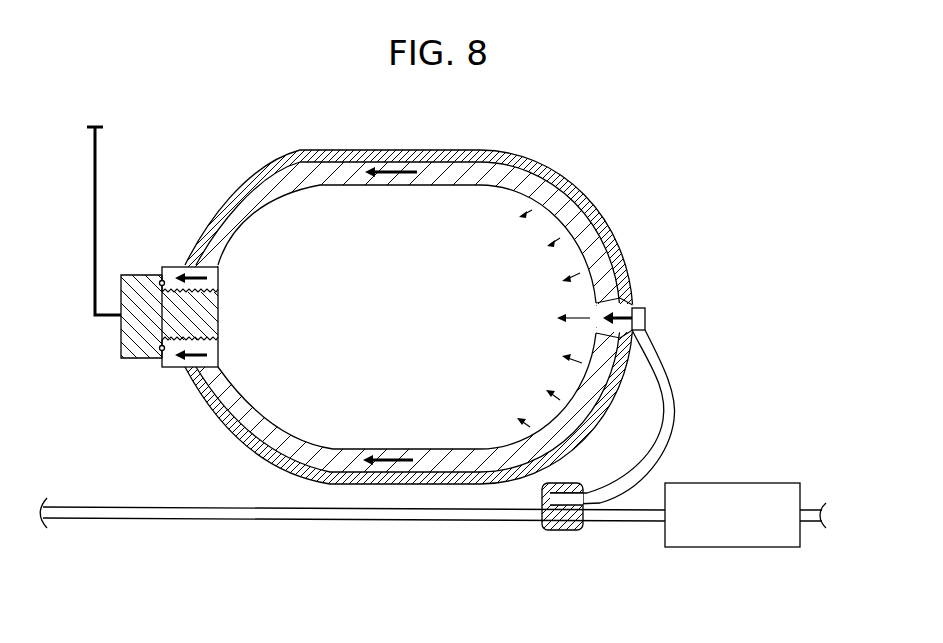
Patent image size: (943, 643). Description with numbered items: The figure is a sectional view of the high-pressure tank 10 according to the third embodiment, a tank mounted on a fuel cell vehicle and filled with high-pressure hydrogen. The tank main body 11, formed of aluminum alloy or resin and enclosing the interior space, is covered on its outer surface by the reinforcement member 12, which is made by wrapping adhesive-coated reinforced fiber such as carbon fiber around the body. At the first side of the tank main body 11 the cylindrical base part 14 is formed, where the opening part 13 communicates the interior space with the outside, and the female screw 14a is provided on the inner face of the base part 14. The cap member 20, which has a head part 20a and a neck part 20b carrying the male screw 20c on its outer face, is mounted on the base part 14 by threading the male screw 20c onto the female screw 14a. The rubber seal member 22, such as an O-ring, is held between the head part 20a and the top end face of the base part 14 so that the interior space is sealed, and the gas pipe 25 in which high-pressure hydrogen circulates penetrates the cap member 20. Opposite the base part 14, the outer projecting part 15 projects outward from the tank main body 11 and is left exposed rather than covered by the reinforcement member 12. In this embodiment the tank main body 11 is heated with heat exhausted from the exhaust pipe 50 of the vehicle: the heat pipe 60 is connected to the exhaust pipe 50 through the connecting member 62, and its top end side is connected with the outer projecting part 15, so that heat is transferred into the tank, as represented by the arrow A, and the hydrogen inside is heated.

The high-pressure tank 10 is at (409, 129).
The tank main body 11 is at (560, 208).
The reinforcement member 12 is at (540, 174).
The opening part 13 is at (240, 323).
The base part 14 is at (175, 367).
The female screw 14a is at (215, 332).
The outer projecting part 15 is at (638, 300).
The cap member 20 is at (148, 277).
The head part 20a is at (121, 348).
The neck part 20b is at (210, 305).
The male screw 20c is at (210, 287).
The seal member 22 is at (157, 353).
The gas pipe 25 is at (98, 160).
The exhaust pipe 50 is at (168, 507).
The heat pipe 60 is at (665, 368).
The connecting member 62 is at (575, 483).
The arrow A is at (580, 316).